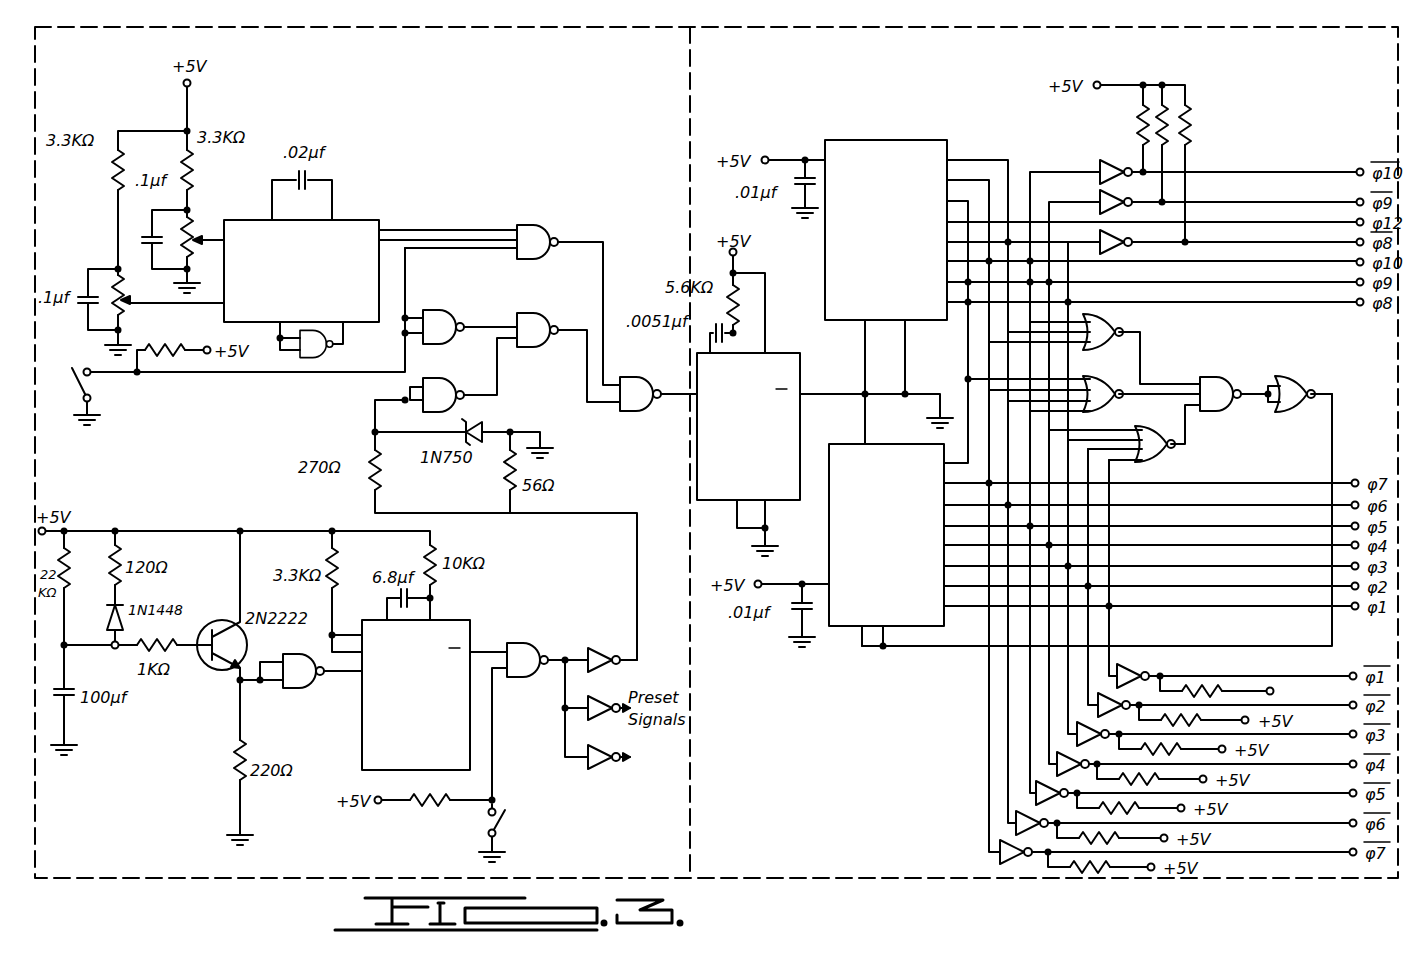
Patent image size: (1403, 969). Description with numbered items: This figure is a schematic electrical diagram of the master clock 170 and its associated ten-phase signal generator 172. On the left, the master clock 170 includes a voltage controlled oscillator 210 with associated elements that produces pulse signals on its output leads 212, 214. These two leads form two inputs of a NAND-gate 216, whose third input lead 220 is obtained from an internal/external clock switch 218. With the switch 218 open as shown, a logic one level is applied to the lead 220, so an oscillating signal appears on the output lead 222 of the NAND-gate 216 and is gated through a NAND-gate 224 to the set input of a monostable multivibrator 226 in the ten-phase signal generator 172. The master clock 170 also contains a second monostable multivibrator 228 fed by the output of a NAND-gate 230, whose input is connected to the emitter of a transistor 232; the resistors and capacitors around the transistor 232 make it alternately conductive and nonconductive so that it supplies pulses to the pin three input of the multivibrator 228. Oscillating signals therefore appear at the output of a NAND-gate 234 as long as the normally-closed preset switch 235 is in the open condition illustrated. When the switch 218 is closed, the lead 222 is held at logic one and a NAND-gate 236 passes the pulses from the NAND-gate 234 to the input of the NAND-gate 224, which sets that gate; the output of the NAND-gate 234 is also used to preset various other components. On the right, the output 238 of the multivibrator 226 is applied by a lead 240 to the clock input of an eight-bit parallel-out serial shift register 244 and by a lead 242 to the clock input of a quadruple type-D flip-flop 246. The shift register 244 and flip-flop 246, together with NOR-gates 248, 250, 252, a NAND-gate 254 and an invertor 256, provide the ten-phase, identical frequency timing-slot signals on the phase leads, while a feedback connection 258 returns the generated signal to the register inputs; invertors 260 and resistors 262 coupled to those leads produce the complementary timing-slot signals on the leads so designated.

The master clock 170 is at (499, 62).
The ten-phase signal generator 172 is at (816, 63).
The voltage controlled oscillator 210 is at (362, 323).
The output lead 212 is at (467, 233).
The output lead 214 is at (401, 228).
The NAND-gate 216 is at (543, 225).
The internal/external clock switch 218 is at (76, 386).
The third input lead 220 is at (469, 252).
The output lead 222 is at (605, 230).
The NAND-gate 224 is at (643, 413).
The monostable multivibrator 226 is at (802, 367).
The monostable multivibrator 228 is at (472, 627).
The NAND-gate 230 is at (298, 690).
The transistor 232 is at (218, 673).
The NAND-gate 234 is at (537, 646).
The preset switch 235 is at (485, 830).
The NAND-gate 236 is at (560, 316).
The output 238 is at (852, 394).
The lead 240 is at (865, 433).
The lead 242 is at (865, 379).
The eight-bit parallel-out serial shift register 244 is at (835, 504).
The quadruple type-D flip-flop 246 is at (898, 141).
The NOR-gate 248 is at (1118, 318).
The NOR-gate 250 is at (1085, 378).
The NOR-gate 252 is at (1160, 457).
The NAND-gate 254 is at (1215, 377).
The invertor 256 is at (1305, 377).
The feedback line 258 is at (1268, 647).
The invertors 260 is at (1133, 670).
The resistors 262 is at (1220, 691).